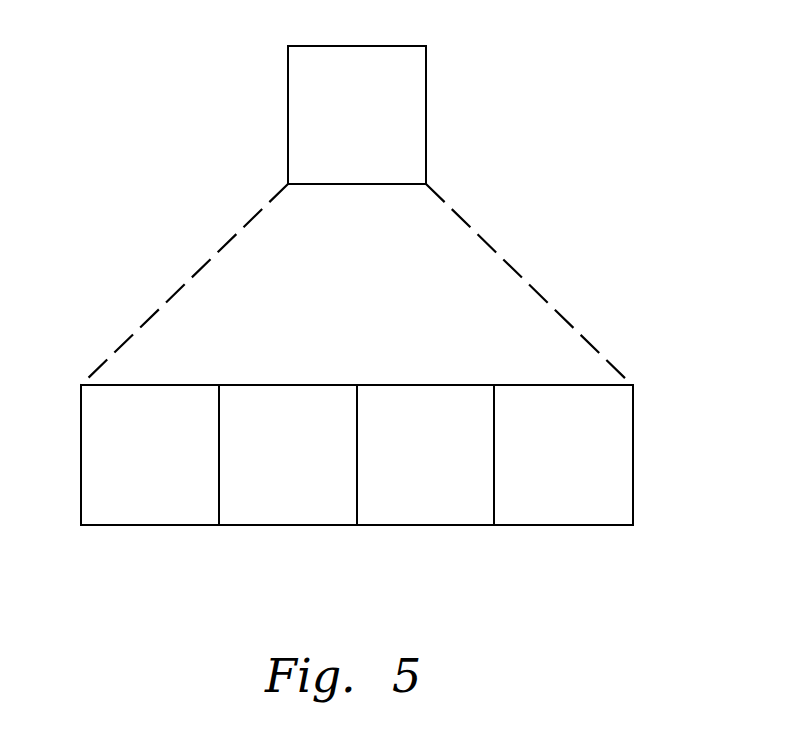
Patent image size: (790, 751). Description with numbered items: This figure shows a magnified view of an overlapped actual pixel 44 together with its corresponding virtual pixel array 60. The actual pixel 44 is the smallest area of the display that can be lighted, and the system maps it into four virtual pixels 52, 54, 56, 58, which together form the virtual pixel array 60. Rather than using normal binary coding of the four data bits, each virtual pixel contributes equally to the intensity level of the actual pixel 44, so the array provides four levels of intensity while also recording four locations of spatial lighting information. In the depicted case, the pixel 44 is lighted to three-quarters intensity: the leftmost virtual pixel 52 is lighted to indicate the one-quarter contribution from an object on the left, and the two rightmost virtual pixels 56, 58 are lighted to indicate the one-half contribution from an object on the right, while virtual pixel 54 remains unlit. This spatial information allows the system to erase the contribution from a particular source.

The actual pixel 44 is at (426, 103).
The virtual pixel array 60 is at (595, 279).
The virtual pixel 52 is at (148, 525).
The virtual pixel 54 is at (280, 525).
The virtual pixel 56 is at (435, 525).
The virtual pixel 58 is at (571, 525).